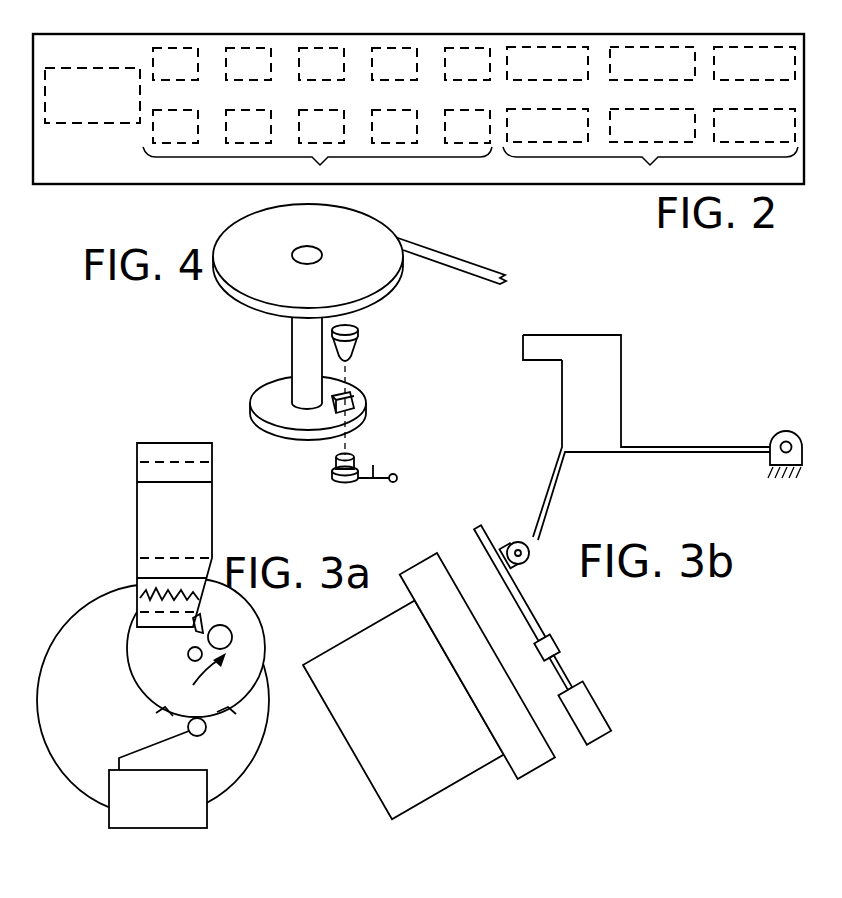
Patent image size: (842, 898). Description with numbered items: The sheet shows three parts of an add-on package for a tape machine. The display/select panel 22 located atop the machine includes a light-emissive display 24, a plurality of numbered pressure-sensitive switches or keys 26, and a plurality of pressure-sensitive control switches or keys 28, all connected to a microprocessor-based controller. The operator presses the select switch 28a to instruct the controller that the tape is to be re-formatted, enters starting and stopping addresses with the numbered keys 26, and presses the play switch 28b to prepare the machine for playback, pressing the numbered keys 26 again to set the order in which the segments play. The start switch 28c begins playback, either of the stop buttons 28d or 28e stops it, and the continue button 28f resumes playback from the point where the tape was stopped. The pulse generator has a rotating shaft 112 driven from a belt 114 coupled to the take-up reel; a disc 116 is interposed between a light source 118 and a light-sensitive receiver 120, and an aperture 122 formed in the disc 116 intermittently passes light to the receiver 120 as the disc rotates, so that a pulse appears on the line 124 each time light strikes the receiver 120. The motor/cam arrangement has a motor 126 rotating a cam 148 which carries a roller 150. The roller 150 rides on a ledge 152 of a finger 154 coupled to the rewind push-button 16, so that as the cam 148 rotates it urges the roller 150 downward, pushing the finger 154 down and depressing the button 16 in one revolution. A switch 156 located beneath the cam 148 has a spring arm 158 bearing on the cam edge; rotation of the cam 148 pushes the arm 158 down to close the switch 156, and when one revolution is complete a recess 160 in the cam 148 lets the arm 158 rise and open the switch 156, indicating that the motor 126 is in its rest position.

In FIG. 2, the display/select panel 22 is at (211, 29).
In FIG. 2, the light-emissive display 24 is at (86, 66).
In FIG. 2, the numbered pressure-sensitive switches 26 is at (317, 115).
In FIG. 2, the pressure-sensitive control switches 28 is at (650, 94).
In FIG. 2, the select switch 28a is at (566, 46).
In FIG. 2, the play switch 28b is at (571, 108).
In FIG. 2, the start switch 28c is at (675, 46).
In FIG. 2, the stop button 28d is at (777, 46).
In FIG. 2, the stop button 28e is at (780, 108).
In FIG. 2, the continue button 28f is at (673, 108).
In FIG. 3B, the rewind push-button 16 is at (572, 420).
In FIG. 4, the rotating shaft 112 is at (298, 358).
In FIG. 4, the belt 114 is at (461, 273).
In FIG. 4, the disc 116 is at (297, 428).
In FIG. 4, the light source 118 is at (358, 345).
In FIG. 4, the light-sensitive receiver 120 is at (336, 476).
In FIG. 4, the aperture 122 is at (350, 399).
In FIG. 4, the line 124 is at (373, 465).
In FIG. 3A, the motor 126 is at (72, 628).
In FIG. 3B, the motor 126 is at (375, 801).
In FIG. 3A, the cam 148 is at (258, 641).
In FIG. 3B, the cam 148 is at (492, 528).
In FIG. 3A, the roller 150 is at (234, 631).
In FIG. 3B, the roller 150 is at (520, 565).
In FIG. 3A, the ledge 152 is at (138, 623).
In FIG. 3B, the ledge 152 is at (526, 537).
In FIG. 3A, the finger 154 is at (150, 521).
In FIG. 3A, the switch 156 is at (208, 806).
In FIG. 3B, the switch 156 is at (608, 711).
In FIG. 3A, the spring arm 158 is at (145, 746).
In FIG. 3A, the recess 160 is at (222, 720).